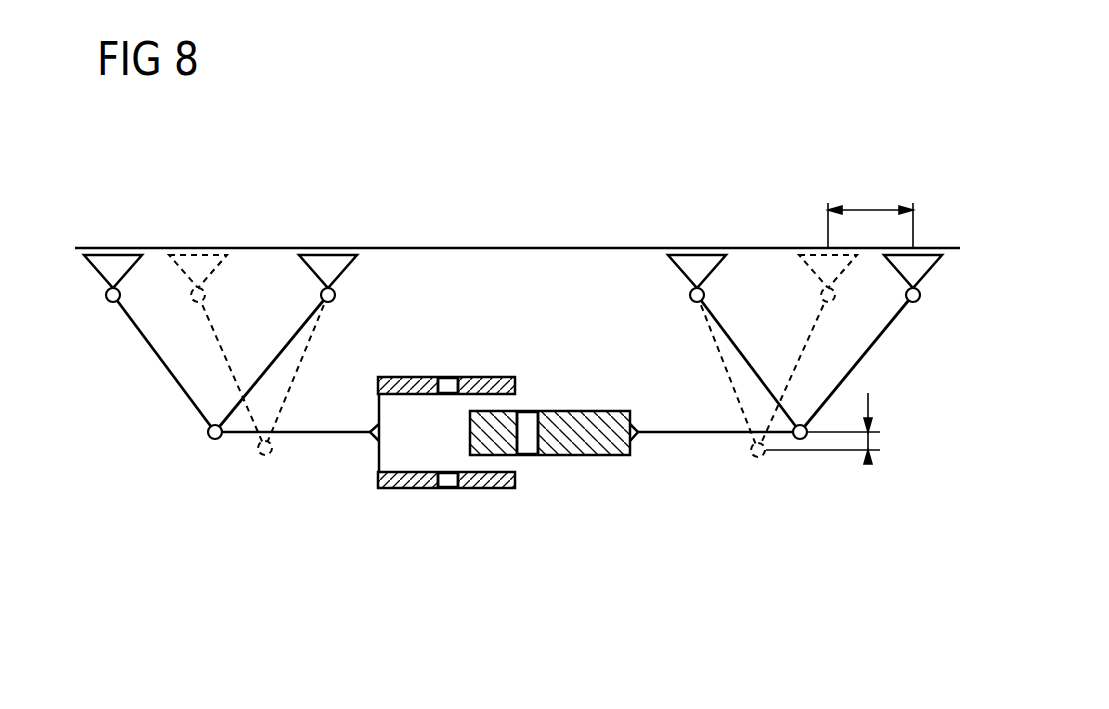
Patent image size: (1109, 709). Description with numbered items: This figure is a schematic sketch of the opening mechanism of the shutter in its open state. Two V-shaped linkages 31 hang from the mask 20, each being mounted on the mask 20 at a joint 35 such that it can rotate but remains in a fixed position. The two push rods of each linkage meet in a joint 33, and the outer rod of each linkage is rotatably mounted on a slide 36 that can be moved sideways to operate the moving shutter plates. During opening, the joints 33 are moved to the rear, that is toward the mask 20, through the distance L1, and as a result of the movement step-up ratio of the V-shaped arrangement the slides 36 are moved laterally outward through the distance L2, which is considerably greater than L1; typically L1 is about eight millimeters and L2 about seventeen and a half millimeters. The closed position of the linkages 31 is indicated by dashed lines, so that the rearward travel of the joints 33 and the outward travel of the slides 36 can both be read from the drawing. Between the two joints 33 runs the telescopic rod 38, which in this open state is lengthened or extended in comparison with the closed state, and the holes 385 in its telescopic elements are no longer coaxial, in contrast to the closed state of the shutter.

The mask 20 is at (483, 247).
The linkages 31 is at (333, 345).
The joint 33 is at (800, 441).
The joint 35 is at (330, 266).
The slide 36 is at (113, 266).
The telescopic rod 38 is at (401, 518).
The holes 385 is at (530, 418).
The distance L1 is at (839, 428).
The distance L2 is at (870, 212).